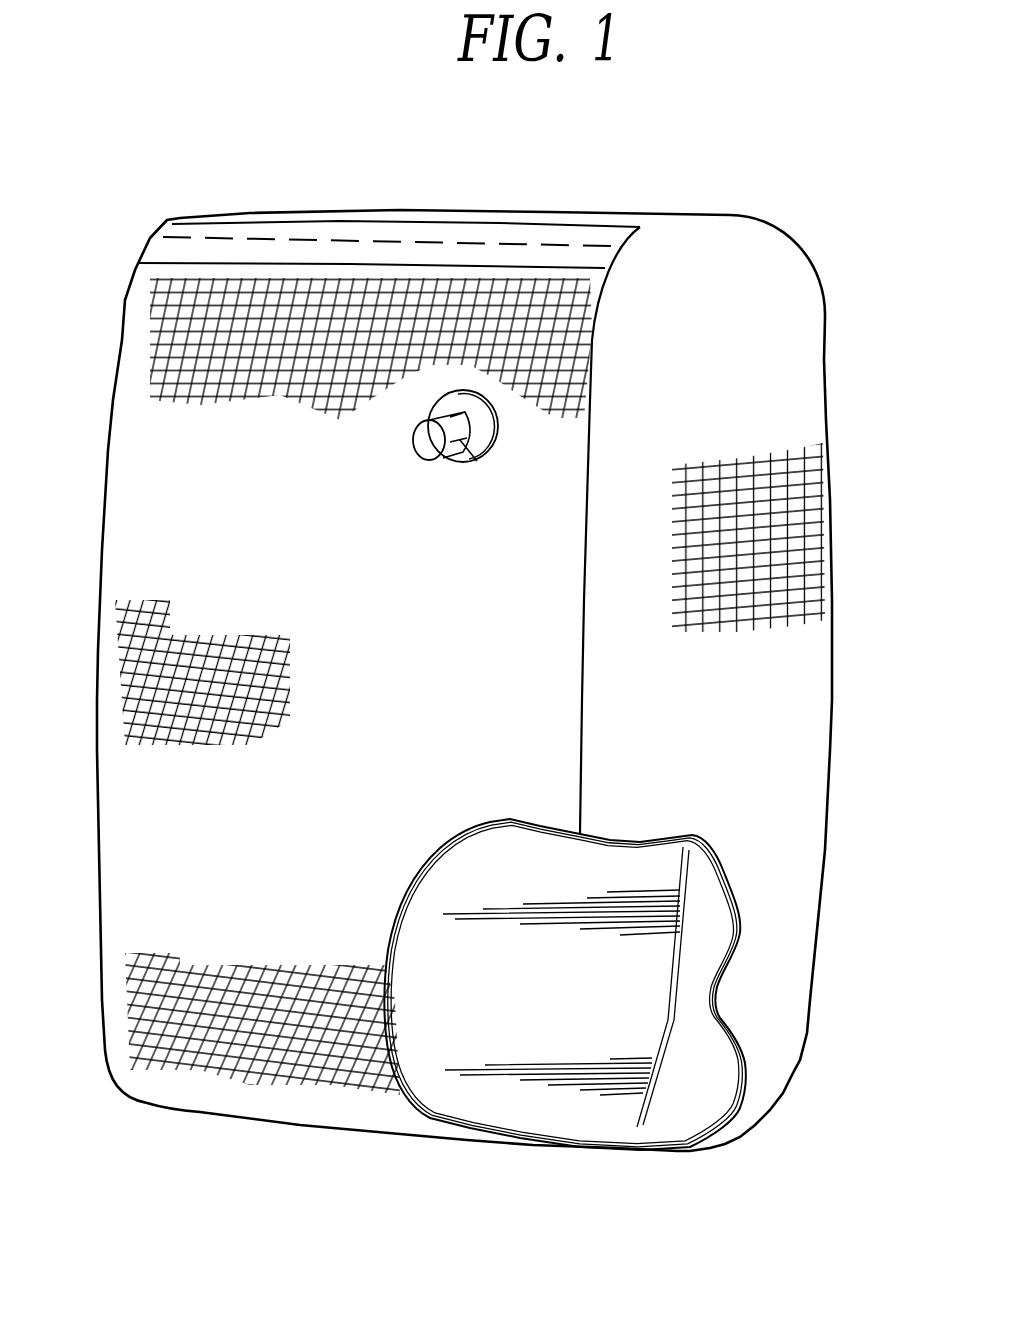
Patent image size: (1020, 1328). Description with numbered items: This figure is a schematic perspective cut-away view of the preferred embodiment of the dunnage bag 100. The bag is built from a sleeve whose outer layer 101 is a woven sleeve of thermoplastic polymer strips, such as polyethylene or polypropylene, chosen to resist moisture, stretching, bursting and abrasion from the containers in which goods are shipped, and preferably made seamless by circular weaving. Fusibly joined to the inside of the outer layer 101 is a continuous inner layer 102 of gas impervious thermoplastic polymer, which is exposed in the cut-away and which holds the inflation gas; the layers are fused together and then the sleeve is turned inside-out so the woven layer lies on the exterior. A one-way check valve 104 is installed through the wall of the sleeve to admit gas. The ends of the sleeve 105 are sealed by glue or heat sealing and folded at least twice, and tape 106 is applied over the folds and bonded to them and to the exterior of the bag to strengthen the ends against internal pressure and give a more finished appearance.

The dunnage bag 100 is at (762, 167).
The outer layer 101 is at (537, 695).
The continuous inner layer 102 is at (598, 1108).
The check valve 104 is at (477, 461).
The ends of the sleeve 105 is at (160, 216).
The tape 106 is at (157, 248).